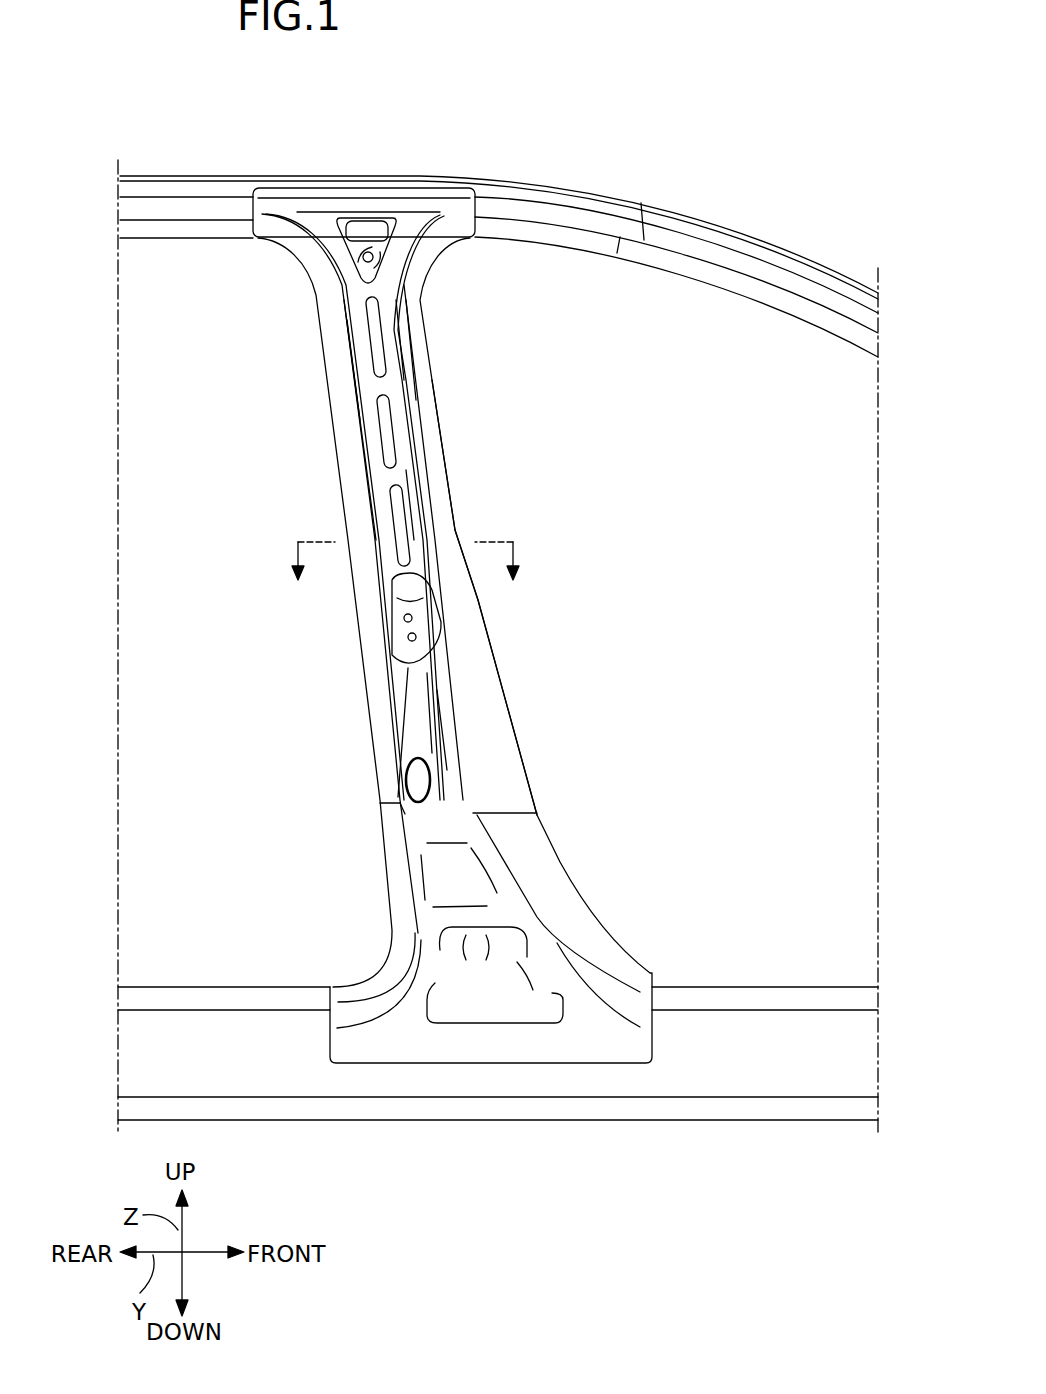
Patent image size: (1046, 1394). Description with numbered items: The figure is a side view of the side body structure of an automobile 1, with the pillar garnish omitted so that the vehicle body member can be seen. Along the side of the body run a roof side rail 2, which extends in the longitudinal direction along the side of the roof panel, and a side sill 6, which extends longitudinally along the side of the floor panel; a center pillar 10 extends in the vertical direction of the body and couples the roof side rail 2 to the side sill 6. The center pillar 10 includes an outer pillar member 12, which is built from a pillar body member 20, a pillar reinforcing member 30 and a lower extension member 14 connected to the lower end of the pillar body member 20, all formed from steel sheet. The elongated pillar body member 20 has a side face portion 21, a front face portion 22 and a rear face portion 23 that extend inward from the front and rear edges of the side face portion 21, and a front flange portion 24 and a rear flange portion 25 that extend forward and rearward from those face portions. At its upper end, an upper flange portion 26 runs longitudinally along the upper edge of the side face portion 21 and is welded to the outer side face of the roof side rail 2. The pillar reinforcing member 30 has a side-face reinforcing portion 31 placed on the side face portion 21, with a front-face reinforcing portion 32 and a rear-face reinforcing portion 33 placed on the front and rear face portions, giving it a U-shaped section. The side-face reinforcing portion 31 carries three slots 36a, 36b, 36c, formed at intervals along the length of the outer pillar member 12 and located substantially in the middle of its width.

The automobile 1 is at (830, 135).
The roof side rail 2 is at (515, 177).
The side sill 6 is at (538, 1121).
The center pillar 10 is at (505, 400).
The outer pillar member 12 is at (481, 507).
The lower extension member 14 is at (565, 910).
The pillar body member 20 is at (447, 453).
The side face portion 21 is at (422, 707).
The front face portion 22 is at (410, 408).
The rear face portion 23 is at (357, 415).
The front flange portion 24 is at (487, 663).
The rear flange portion 25 is at (370, 665).
The upper flange portion 26 is at (370, 188).
The pillar reinforcing member 30 is at (423, 485).
The side-face reinforcing portion 31 is at (413, 527).
The front-face reinforcing portion 32 is at (405, 340).
The rear-face reinforcing portion 33 is at (355, 322).
The slot 36a is at (372, 357).
The slot 36b is at (385, 443).
The slot 36c is at (377, 497).